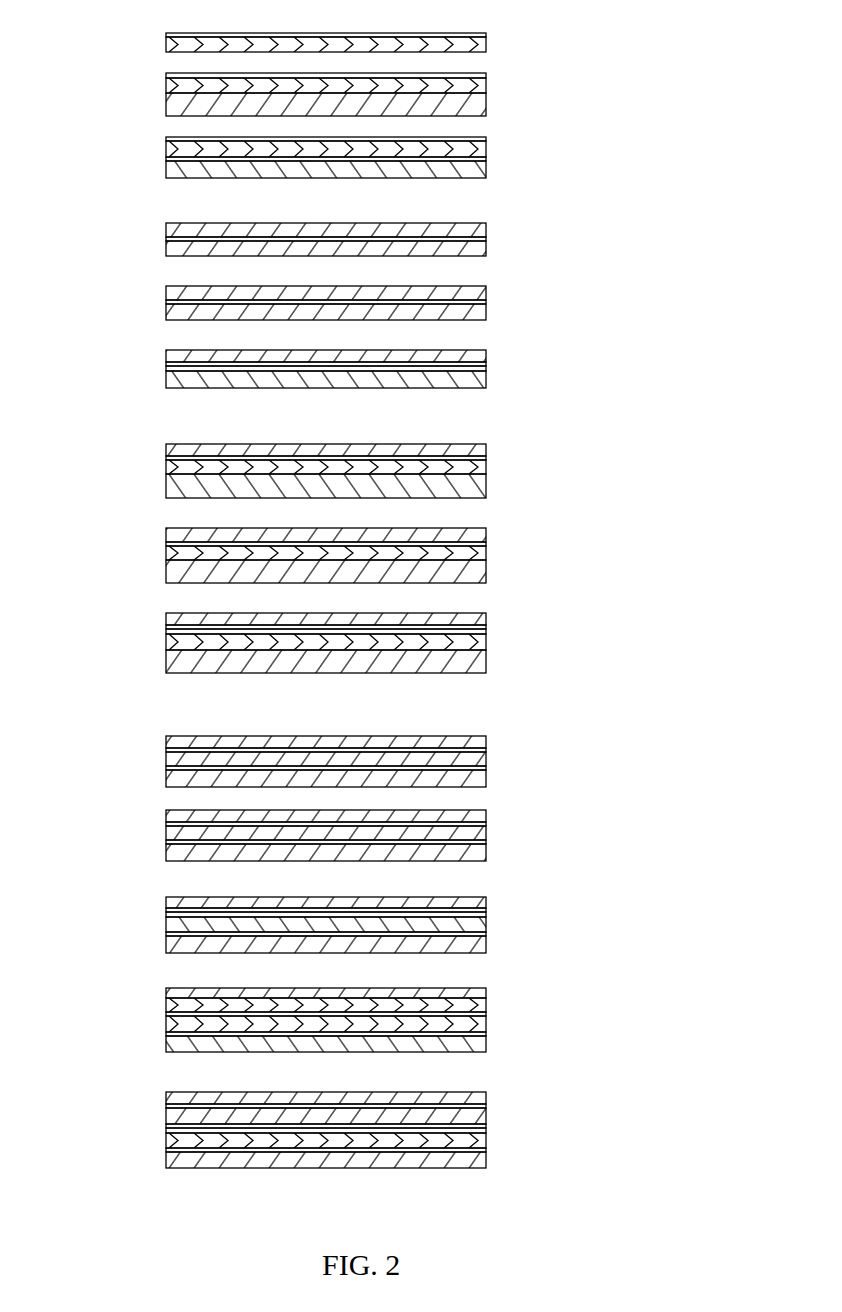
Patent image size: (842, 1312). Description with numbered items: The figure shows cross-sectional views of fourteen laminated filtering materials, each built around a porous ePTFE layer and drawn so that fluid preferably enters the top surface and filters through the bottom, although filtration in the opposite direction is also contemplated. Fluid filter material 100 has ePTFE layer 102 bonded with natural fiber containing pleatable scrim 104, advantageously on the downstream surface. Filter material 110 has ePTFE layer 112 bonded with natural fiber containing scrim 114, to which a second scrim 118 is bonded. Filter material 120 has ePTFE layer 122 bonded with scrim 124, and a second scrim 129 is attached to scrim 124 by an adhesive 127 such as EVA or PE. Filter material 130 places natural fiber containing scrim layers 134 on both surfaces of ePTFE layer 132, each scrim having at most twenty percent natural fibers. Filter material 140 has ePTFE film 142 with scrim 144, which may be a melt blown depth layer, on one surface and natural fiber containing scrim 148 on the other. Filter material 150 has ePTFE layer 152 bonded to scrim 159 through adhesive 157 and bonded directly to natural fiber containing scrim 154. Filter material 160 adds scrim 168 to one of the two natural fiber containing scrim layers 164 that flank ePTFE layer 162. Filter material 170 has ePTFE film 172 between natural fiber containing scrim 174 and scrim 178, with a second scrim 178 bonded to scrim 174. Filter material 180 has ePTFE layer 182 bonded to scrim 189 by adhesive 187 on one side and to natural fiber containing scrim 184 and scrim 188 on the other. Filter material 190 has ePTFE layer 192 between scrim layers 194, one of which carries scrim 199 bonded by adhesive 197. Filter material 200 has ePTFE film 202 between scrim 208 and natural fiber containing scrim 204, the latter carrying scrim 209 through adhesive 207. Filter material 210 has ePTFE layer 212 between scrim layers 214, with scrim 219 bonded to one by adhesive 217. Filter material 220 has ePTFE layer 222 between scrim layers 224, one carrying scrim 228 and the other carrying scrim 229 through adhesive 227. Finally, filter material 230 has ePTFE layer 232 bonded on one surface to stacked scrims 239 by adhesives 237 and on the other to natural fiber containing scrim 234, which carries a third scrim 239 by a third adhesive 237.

The fluid filter material 100 is at (440, 35).
The ePTFE layer 102 is at (486, 34).
The natural fiber containing pleatable scrim 104 is at (486, 45).
The filter material 110 is at (441, 98).
The ePTFE layer 112 is at (486, 76).
The natural fiber containing scrim 114 is at (486, 86).
The second scrim 118 is at (486, 105).
The filter material 120 is at (378, 164).
The ePTFE layer 122 is at (166, 139).
The natural fiber containing scrim 124 is at (166, 149).
The adhesive 127 is at (166, 159).
The second scrim 129 is at (166, 170).
The filter material 130 is at (442, 243).
The ePTFE layer 132 is at (486, 239).
The natural fiber containing scrim layers 134 is at (486, 230).
The filter material 140 is at (384, 300).
The ePTFE film 142 is at (166, 302).
The scrim 144 is at (166, 312).
The scrim 148 is at (166, 293).
The filter material 150 is at (455, 364).
The ePTFE layer 152 is at (486, 368).
The natural fiber containing scrim 154 is at (486, 380).
The adhesive 157 is at (486, 364).
The scrim 159 is at (486, 356).
The filter material 160 is at (381, 465).
The ePTFE layer 162 is at (166, 458).
The natural fiber containing scrim layers 164 is at (166, 450).
The scrim 168 is at (166, 486).
The filter material 170 is at (457, 546).
The ePTFE film 172 is at (486, 544).
The scrim 174 is at (486, 553).
The scrim 178 is at (486, 535).
The filter material 180 is at (384, 645).
The ePTFE layer 182 is at (166, 632).
The natural fiber containing scrim 184 is at (166, 642).
The adhesive 187 is at (166, 627).
The scrim 188 is at (166, 662).
The scrim 189 is at (166, 619).
The filter material 190 is at (457, 754).
The ePTFE layer 192 is at (486, 750).
The natural fiber containing scrim layers 194 is at (486, 742).
The adhesive 197 is at (486, 768).
The scrim 199 is at (486, 778).
The filter material 200 is at (369, 830).
The ePTFE film 202 is at (166, 824).
The scrim 204 is at (166, 833).
The adhesive 207 is at (166, 842).
The scrim 208 is at (166, 816).
The scrim 209 is at (166, 852).
The filter material 210 is at (466, 925).
The ePTFE layer 212 is at (486, 914).
The natural fiber containing scrim layers 214 is at (486, 924).
The adhesive 217 is at (486, 910).
The scrim 219 is at (486, 902).
The filter material 220 is at (376, 1009).
The ePTFE layer 222 is at (166, 1014).
The natural fiber containing scrim layers 224 is at (166, 1005).
The adhesive 227 is at (166, 1034).
The scrim 228 is at (166, 993).
The scrim 229 is at (166, 1044).
The filter material 230 is at (463, 1123).
The ePTFE layer 232 is at (486, 1130).
The natural fiber containing scrim 234 is at (486, 1140).
The adhesive 237 is at (486, 1106).
The scrim 239 is at (486, 1098).